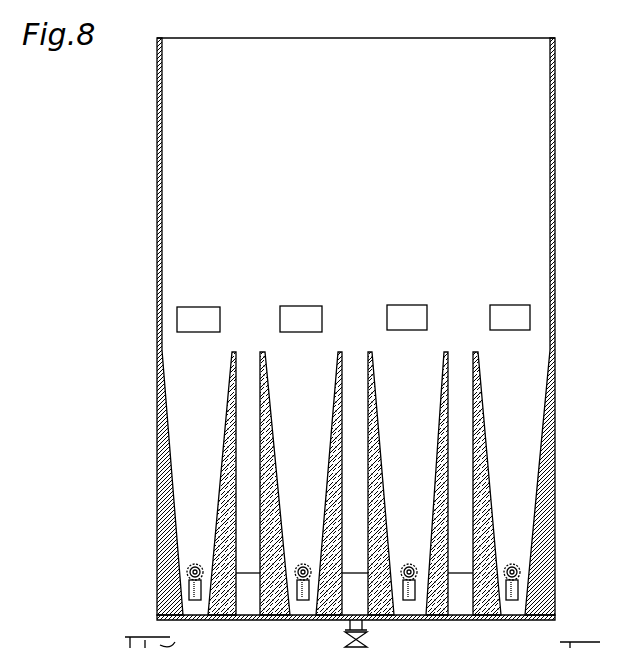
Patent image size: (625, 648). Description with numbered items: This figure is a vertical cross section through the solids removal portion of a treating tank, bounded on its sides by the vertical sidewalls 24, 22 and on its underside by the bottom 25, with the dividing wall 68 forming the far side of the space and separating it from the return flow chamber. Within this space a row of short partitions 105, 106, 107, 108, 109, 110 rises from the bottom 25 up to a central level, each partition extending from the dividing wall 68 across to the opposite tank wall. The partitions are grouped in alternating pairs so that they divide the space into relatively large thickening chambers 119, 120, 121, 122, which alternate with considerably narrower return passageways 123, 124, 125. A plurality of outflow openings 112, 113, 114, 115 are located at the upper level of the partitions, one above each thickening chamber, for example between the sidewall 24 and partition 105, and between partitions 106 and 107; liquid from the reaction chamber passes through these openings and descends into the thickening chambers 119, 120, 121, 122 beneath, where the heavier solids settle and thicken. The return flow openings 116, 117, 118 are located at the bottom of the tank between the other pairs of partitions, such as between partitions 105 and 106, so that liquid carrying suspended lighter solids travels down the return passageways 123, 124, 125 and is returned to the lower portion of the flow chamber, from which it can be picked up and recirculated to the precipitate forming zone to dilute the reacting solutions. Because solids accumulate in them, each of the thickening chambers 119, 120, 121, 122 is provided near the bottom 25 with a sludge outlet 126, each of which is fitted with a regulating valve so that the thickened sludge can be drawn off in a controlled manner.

The vertical sidewall 22 is at (555, 173).
The vertical sidewall 24 is at (158, 147).
The bottom 25 is at (530, 620).
The dividing wall 68 is at (351, 133).
The short partition 105 is at (236, 352).
The short partition 106 is at (262, 352).
The short partition 107 is at (340, 352).
The short partition 108 is at (370, 352).
The short partition 109 is at (447, 352).
The short partition 110 is at (476, 352).
The outflow opening 112 is at (184, 307).
The outflow opening 113 is at (298, 294).
The outflow opening 114 is at (398, 305).
The outflow opening 115 is at (518, 300).
The return flow opening 116 is at (248, 605).
The return flow opening 117 is at (323, 603).
The return flow opening 118 is at (460, 600).
The thickening chamber 119 is at (177, 375).
The thickening chamber 120 is at (303, 433).
The thickening chamber 121 is at (410, 437).
The thickening chamber 122 is at (528, 420).
The return passageway 123 is at (245, 405).
The return passageway 124 is at (352, 403).
The return passageway 125 is at (466, 402).
The sludge outlet 126 is at (193, 562).